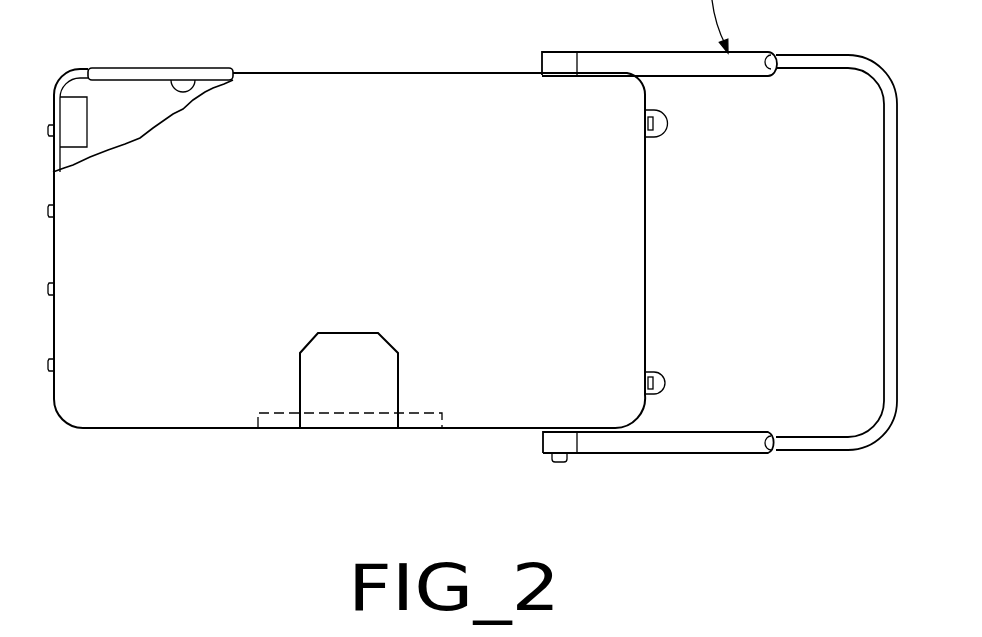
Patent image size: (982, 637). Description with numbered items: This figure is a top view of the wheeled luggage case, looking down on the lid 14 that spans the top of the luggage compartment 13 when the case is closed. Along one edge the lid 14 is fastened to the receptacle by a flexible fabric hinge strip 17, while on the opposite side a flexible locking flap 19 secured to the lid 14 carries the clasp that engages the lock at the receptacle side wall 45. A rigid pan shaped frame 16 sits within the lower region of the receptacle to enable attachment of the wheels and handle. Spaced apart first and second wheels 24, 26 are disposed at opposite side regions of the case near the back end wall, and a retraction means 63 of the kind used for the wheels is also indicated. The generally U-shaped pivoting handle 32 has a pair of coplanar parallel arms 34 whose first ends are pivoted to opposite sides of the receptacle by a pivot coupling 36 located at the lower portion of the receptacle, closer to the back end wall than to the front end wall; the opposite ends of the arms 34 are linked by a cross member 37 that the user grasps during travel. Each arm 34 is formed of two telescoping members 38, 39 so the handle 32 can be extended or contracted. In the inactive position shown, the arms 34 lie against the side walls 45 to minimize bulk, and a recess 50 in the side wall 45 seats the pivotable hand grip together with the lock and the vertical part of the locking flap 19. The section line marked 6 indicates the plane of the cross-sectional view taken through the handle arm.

The luggage compartment 13 is at (172, 78).
The lid 14 is at (262, 260).
The pan shaped frame 16 is at (70, 163).
The hinge strip 17 is at (117, 68).
The locking flap 19 is at (363, 386).
The first wheel 24 is at (668, 128).
The second wheel 26 is at (657, 374).
The pivoting handle 32 is at (773, 482).
The arms 34 is at (703, 462).
The pivot coupling 36 is at (530, 476).
The cross member 37 is at (872, 229).
The telescoping member 38 is at (632, 455).
The telescoping member 39 is at (838, 452).
The side wall 45 is at (205, 435).
The recess 50 is at (407, 413).
The retraction means 63 is at (105, 123).
The section line 6- 6 is at (787, 363).